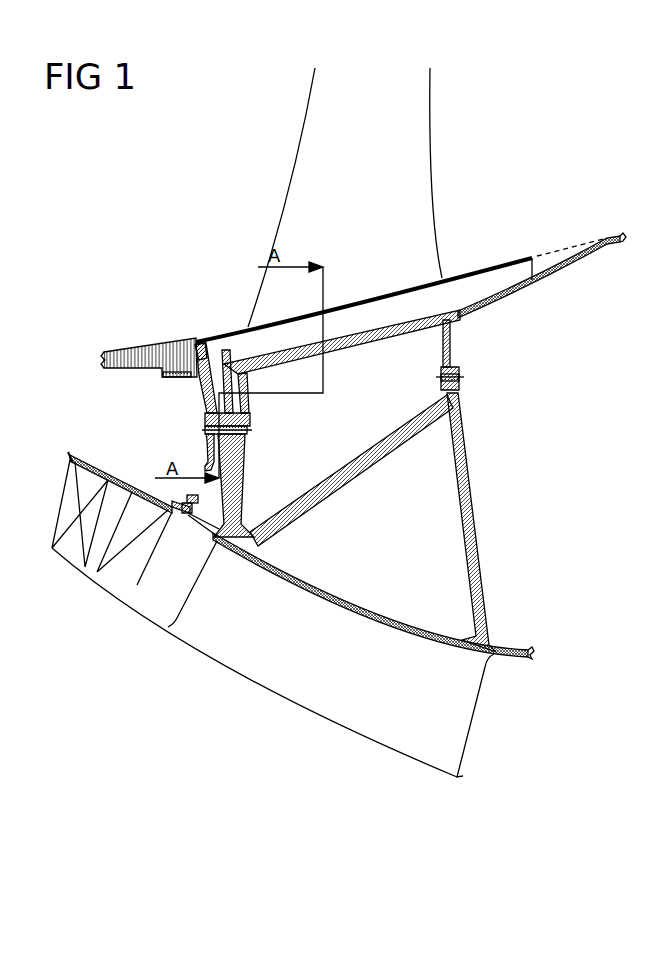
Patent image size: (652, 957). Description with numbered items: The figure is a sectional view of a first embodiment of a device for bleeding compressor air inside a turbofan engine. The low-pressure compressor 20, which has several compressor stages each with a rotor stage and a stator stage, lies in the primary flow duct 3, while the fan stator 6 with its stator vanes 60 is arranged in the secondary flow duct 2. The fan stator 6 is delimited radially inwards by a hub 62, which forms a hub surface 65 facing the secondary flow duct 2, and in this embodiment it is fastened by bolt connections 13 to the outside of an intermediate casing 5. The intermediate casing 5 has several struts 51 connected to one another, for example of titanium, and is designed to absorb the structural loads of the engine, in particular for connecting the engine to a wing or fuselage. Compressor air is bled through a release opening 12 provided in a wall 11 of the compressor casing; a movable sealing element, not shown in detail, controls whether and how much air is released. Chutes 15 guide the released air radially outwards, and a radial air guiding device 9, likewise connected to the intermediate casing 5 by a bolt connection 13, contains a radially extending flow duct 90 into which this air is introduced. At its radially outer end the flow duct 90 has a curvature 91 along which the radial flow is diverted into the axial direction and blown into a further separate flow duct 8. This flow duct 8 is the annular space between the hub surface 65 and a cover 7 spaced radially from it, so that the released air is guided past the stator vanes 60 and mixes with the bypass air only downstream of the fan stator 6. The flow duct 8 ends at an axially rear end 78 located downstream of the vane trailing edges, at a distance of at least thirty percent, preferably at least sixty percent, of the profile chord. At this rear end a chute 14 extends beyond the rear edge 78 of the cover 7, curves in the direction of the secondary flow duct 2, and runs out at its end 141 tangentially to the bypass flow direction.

The secondary flow duct 2 is at (144, 212).
The primary flow duct 3 is at (344, 661).
The intermediate casing 5 is at (370, 515).
The fan stator 6 is at (271, 165).
The cover 7 is at (410, 274).
The separate flow duct 8 is at (372, 315).
The radial air guiding device 9 is at (198, 393).
The wall 11 is at (118, 472).
The release opening 12 is at (186, 538).
The bolt connection 13 is at (248, 428).
The chute 14 is at (551, 250).
The chute 15 is at (207, 450).
The low-pressure compressor 20 is at (82, 590).
The strut 51 is at (243, 470).
The stator vane 60 is at (420, 146).
The hub 62 is at (353, 344).
The hub surface 65 is at (396, 329).
The axially rear end 78 is at (533, 257).
The flow duct 90 is at (214, 383).
The curvature 91 is at (215, 343).
The end 141 is at (613, 220).